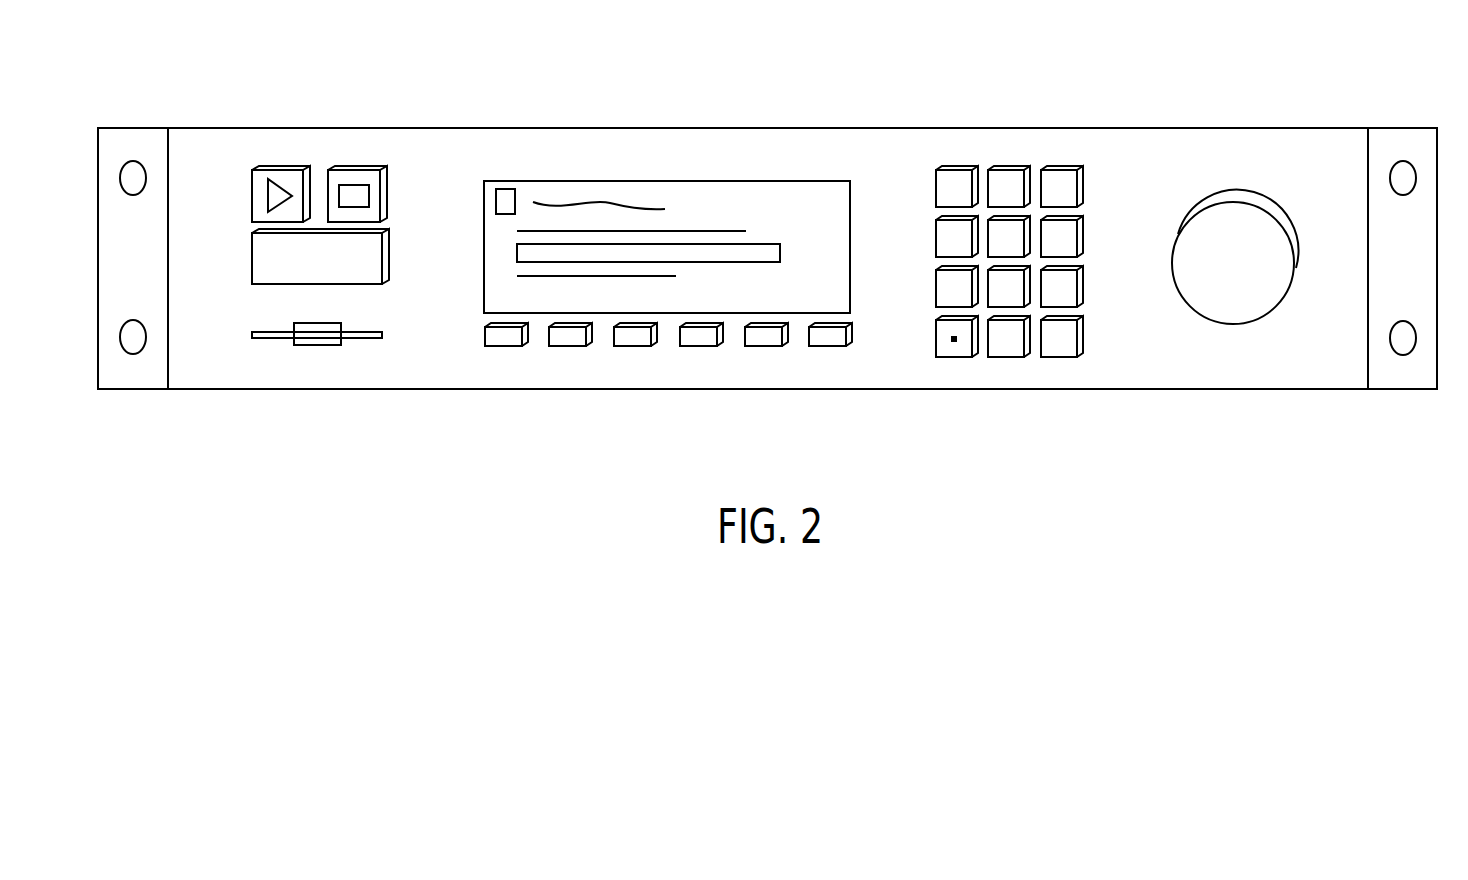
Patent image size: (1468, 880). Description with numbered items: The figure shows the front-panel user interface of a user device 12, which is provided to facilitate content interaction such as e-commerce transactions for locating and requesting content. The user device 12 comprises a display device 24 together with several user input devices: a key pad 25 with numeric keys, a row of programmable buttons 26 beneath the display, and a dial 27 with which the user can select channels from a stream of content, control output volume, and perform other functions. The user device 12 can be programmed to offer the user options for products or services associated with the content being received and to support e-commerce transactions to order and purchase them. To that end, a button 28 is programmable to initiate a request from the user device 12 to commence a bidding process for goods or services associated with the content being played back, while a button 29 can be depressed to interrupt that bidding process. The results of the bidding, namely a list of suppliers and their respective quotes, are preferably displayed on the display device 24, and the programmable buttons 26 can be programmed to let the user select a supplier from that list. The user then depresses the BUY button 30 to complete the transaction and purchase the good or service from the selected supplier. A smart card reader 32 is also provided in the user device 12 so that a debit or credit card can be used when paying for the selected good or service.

The user device 12 is at (996, 104).
The display device 24 is at (837, 292).
The key pad 25 is at (1082, 397).
The programmable buttons 26 is at (852, 397).
The dial 27 is at (1235, 198).
The button 28 is at (252, 190).
The button 29 is at (387, 192).
The BUY button 30 is at (389, 248).
The smart card reader 32 is at (323, 345).